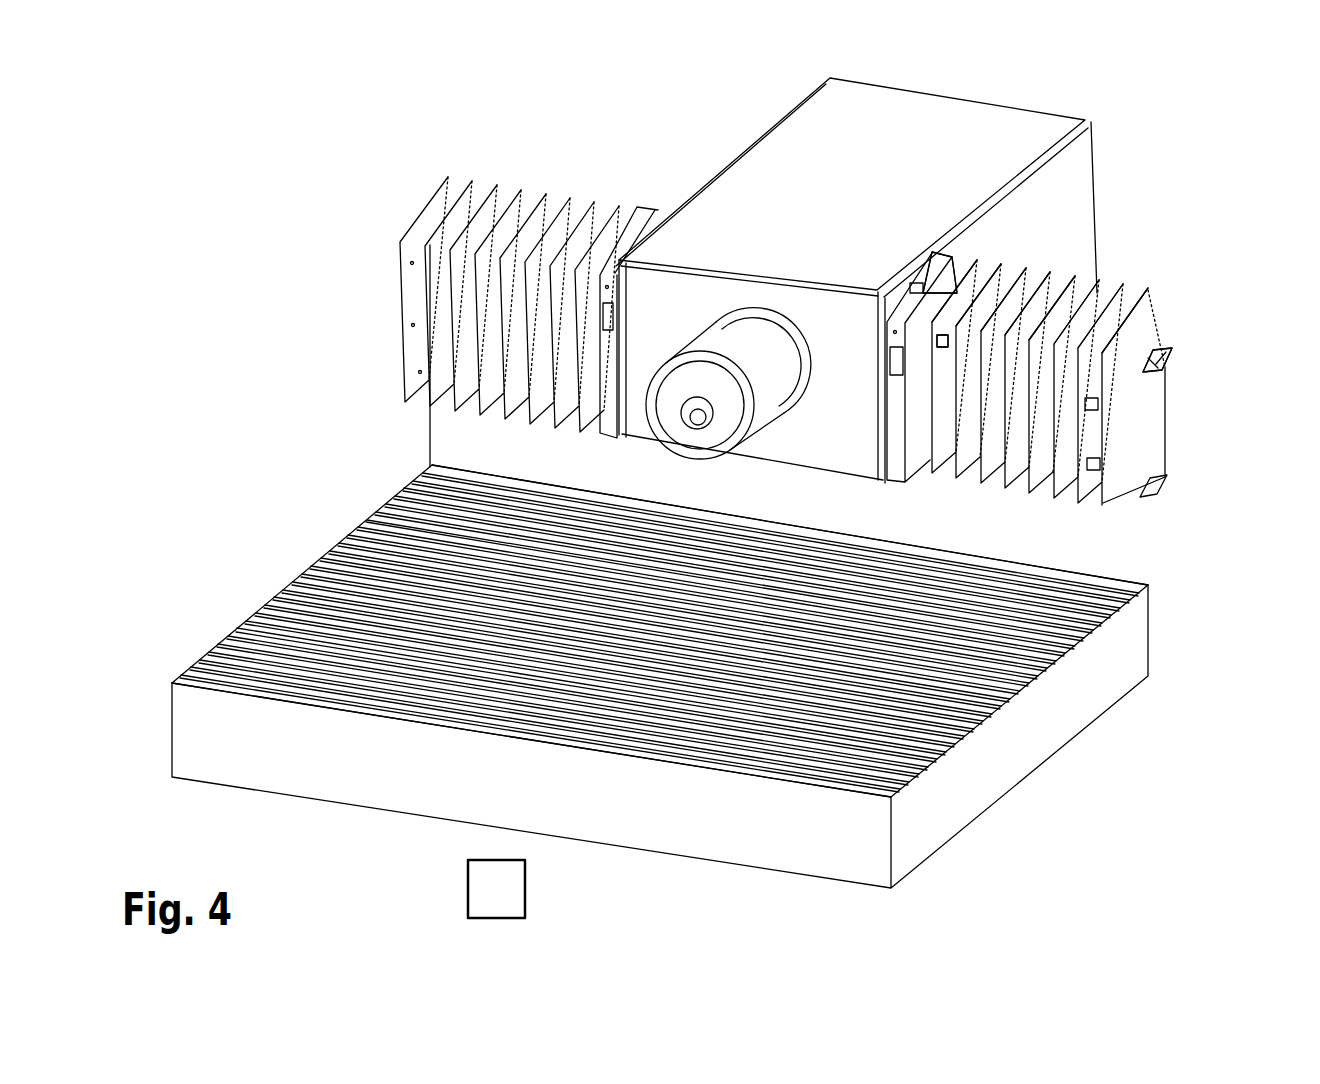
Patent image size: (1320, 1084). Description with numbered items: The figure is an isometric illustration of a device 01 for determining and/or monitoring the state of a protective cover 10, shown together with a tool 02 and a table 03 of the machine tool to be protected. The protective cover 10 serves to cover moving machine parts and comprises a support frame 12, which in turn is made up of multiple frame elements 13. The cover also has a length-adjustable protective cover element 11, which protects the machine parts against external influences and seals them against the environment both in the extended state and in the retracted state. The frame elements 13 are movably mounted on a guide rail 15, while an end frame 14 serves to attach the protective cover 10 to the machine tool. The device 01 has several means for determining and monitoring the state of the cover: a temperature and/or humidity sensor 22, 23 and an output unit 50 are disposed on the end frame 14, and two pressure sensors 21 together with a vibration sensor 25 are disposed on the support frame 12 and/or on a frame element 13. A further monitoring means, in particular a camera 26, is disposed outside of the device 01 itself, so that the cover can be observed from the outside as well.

The device 01 is at (279, 160).
The protective cover 10 is at (258, 260).
The length-adjustable protective cover element 11 is at (468, 204).
The support frame 12 is at (1120, 303).
The frame elements 13 is at (1197, 327).
The end frame 14 is at (607, 375).
The guide rail 15 is at (1150, 487).
The pressure sensors 21 is at (1098, 405).
The temperature and/or humidity sensor 22 is at (633, 241).
The temperature and/or humidity sensor 23 is at (1190, 387).
The vibration sensor 25 is at (942, 343).
The camera 26 is at (480, 890).
The output unit 50 is at (607, 328).
The tool 02 is at (695, 410).
The table 03 is at (1066, 695).